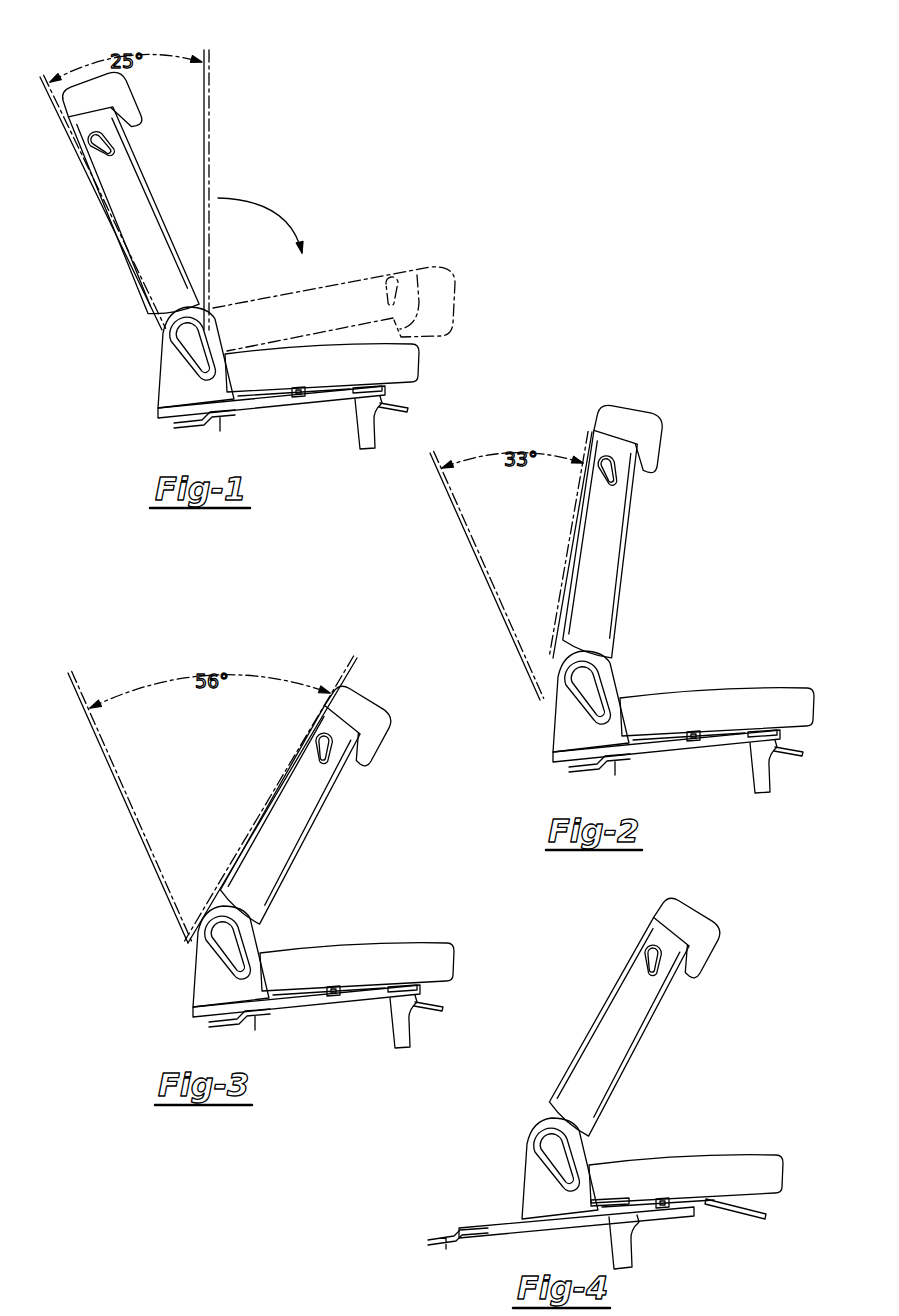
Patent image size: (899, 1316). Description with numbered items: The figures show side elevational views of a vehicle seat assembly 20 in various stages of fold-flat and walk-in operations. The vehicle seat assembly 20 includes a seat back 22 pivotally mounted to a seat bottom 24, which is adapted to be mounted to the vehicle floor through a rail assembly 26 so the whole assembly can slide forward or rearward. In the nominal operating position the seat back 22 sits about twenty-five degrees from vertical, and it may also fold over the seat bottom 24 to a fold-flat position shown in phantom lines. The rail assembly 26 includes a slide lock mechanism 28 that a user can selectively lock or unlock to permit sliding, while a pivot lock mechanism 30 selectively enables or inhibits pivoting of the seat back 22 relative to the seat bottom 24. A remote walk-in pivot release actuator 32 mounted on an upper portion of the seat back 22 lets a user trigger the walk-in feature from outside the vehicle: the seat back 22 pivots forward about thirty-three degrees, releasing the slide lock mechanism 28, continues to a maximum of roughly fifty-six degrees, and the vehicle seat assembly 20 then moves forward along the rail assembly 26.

In FIG. 1, the vehicle seat assembly 20 is at (305, 170).
In FIG. 2, the vehicle seat assembly 20 is at (712, 513).
In FIG. 3, the vehicle seat assembly 20 is at (403, 808).
In FIG. 4, the vehicle seat assembly 20 is at (727, 1023).
In FIG. 1, the seat back 22 is at (152, 194).
In FIG. 2, the seat back 22 is at (629, 553).
In FIG. 3, the seat back 22 is at (308, 842).
In FIG. 4, the seat back 22 is at (642, 1047).
In FIG. 1, the seat bottom 24 is at (412, 366).
In FIG. 2, the seat bottom 24 is at (810, 703).
In FIG. 3, the seat bottom 24 is at (445, 962).
In FIG. 4, the seat bottom 24 is at (782, 1171).
In FIG. 1, the rail assembly 26 is at (322, 406).
In FIG. 2, the rail assembly 26 is at (713, 748).
In FIG. 3, the rail assembly 26 is at (352, 1003).
In FIG. 4, the rail assembly 26 is at (656, 1214).
In FIG. 1, the slide lock mechanism 28 is at (300, 398).
In FIG. 2, the slide lock mechanism 28 is at (691, 737).
In FIG. 3, the slide lock mechanism 28 is at (330, 996).
In FIG. 4, the slide lock mechanism 28 is at (672, 1203).
In FIG. 1, the pivot lock mechanism 30 is at (173, 344).
In FIG. 2, the pivot lock mechanism 30 is at (598, 668).
In FIG. 3, the pivot lock mechanism 30 is at (208, 943).
In FIG. 4, the pivot lock mechanism 30 is at (540, 1148).
In FIG. 1, the remote walk-in pivot release actuator 32 is at (92, 152).
In FIG. 2, the remote walk-in pivot release actuator 32 is at (615, 479).
In FIG. 3, the remote walk-in pivot release actuator 32 is at (318, 760).
In FIG. 4, the remote walk-in pivot release actuator 32 is at (650, 966).